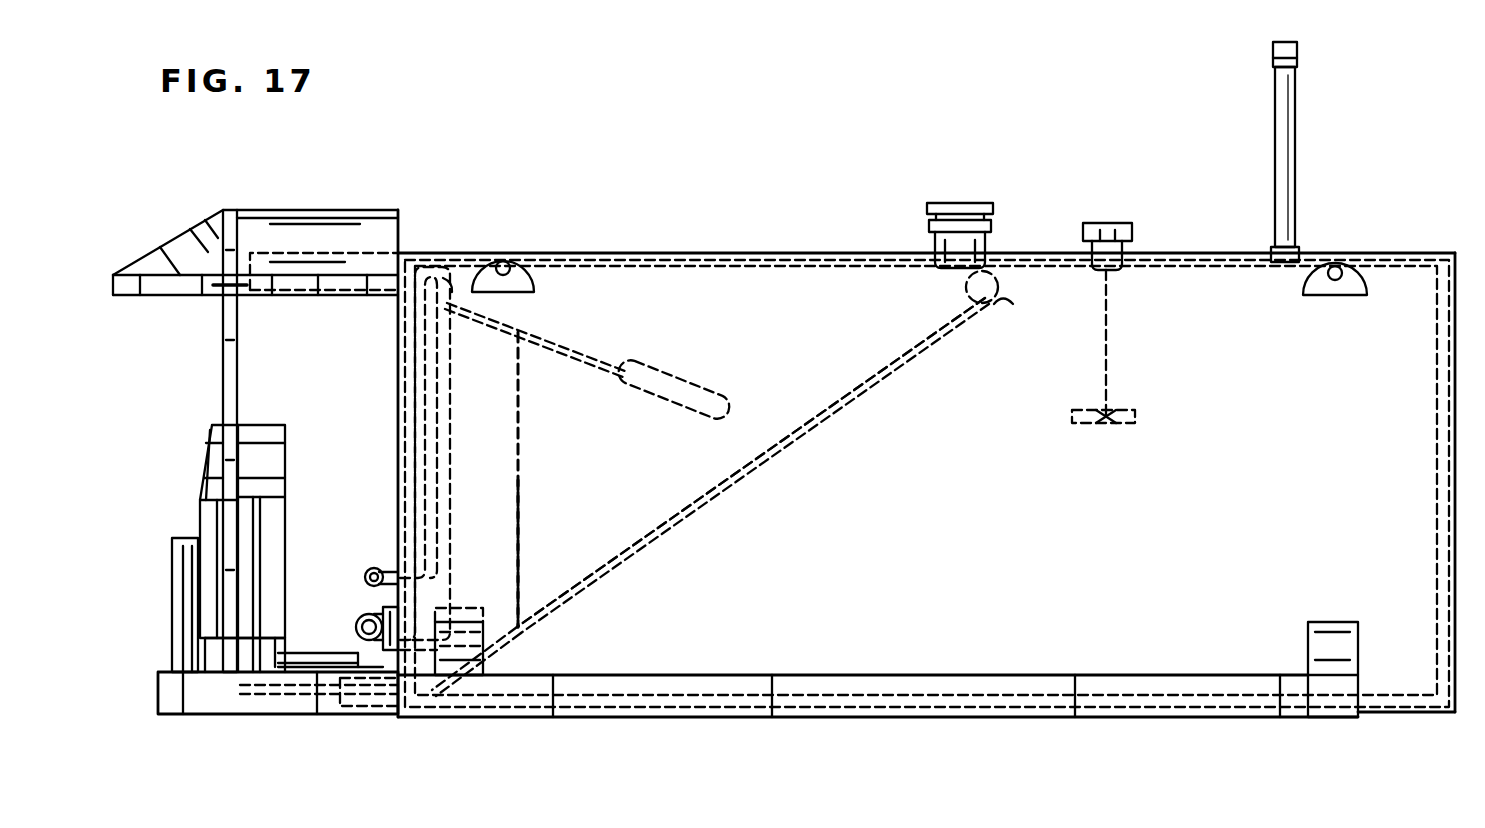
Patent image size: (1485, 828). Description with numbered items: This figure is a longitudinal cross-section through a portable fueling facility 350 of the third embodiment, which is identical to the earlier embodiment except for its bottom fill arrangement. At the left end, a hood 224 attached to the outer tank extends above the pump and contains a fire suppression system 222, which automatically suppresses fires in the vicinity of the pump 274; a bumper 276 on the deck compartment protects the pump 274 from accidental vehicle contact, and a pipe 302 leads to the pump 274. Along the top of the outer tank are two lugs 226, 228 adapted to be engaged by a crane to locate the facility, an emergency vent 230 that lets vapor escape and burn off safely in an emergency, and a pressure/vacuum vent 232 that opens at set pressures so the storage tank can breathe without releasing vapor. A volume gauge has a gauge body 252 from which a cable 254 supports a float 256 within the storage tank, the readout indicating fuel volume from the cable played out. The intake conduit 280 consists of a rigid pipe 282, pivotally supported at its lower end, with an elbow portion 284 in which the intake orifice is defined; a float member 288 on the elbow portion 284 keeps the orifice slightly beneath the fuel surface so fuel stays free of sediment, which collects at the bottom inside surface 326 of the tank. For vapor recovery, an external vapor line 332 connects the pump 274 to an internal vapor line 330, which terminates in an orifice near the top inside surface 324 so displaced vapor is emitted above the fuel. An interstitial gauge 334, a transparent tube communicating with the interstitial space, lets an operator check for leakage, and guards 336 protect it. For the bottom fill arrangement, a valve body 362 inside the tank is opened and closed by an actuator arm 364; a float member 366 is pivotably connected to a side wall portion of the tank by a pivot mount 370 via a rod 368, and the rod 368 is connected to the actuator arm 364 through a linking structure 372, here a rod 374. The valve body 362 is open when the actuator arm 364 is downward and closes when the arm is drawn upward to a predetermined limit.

The fire suppression system 222 is at (307, 252).
The hood 224 is at (184, 240).
The lug 226 is at (518, 268).
The lug 228 is at (1341, 270).
The emergency vent 230 is at (937, 203).
The pressure/vacuum vent 232 is at (1296, 152).
The gauge body 252 is at (1106, 223).
The cable 254 is at (1108, 376).
The float 256 is at (1145, 417).
The pump 274 is at (268, 423).
The bumper 276 is at (195, 538).
The intake conduit 280 is at (684, 526).
The rigid pipe 282 is at (897, 379).
The elbow portion 284 is at (1014, 301).
The float member 288 is at (965, 293).
The pipe 302 is at (240, 690).
The top inside surface 324 is at (1216, 270).
The bottom inside surface 326 is at (848, 694).
The internal vapor line 330 is at (438, 366).
The external vapor line 332 is at (312, 660).
The interstitial gauge 334 is at (388, 650).
The guard 336 is at (362, 660).
The fueling facility 350 is at (568, 200).
The valve body 362 is at (448, 608).
The actuator arm 364 is at (495, 641).
The float member 366 is at (690, 379).
The rod 368 is at (545, 338).
The pivot mount 370 is at (453, 278).
The linking structure 372 is at (524, 473).
The rod 374 is at (521, 544).